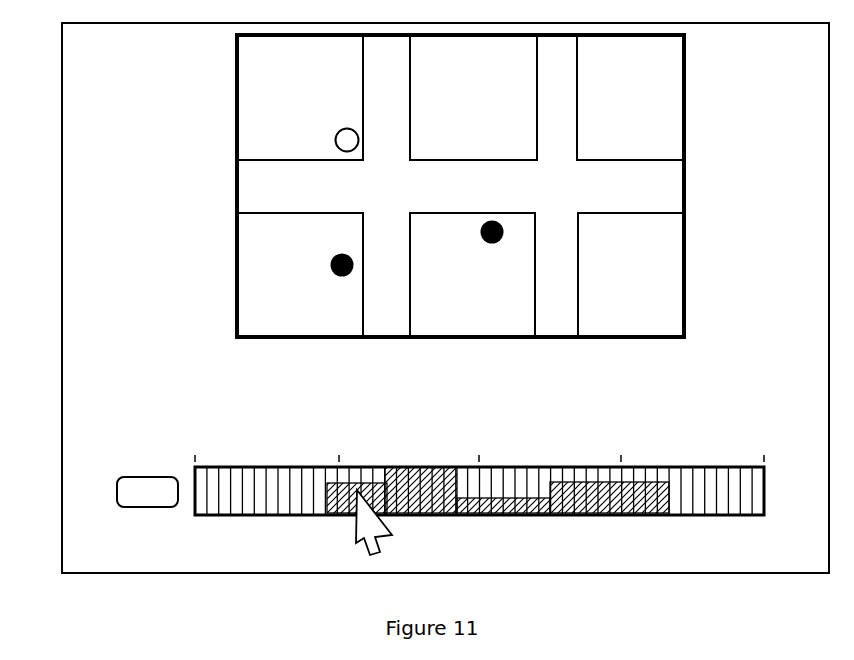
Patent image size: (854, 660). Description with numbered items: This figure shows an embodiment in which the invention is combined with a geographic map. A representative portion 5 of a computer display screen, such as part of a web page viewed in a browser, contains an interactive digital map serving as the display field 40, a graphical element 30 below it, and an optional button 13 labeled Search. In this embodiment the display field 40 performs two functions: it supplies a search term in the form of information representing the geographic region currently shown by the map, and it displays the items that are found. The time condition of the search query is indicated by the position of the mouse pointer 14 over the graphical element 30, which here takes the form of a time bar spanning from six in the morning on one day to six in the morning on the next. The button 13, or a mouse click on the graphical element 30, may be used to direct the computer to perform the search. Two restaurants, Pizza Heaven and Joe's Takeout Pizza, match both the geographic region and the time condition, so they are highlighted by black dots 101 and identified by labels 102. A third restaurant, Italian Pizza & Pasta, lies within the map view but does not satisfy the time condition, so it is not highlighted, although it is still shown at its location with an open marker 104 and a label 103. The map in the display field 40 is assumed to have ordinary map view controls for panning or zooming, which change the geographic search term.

The representative portion of a computer display screen 5 is at (61, 320).
The button 13 is at (142, 477).
The mouse pointer 14 is at (378, 533).
The graphical element 30 is at (287, 467).
The display field 40 is at (236, 160).
The black dots 101 is at (480, 231).
The labels 102 is at (497, 273).
The non-matching location label 103 is at (388, 128).
The open location marker 104 is at (337, 134).